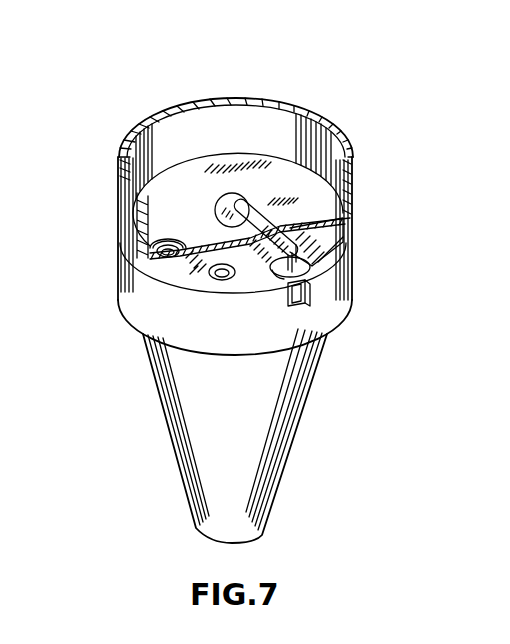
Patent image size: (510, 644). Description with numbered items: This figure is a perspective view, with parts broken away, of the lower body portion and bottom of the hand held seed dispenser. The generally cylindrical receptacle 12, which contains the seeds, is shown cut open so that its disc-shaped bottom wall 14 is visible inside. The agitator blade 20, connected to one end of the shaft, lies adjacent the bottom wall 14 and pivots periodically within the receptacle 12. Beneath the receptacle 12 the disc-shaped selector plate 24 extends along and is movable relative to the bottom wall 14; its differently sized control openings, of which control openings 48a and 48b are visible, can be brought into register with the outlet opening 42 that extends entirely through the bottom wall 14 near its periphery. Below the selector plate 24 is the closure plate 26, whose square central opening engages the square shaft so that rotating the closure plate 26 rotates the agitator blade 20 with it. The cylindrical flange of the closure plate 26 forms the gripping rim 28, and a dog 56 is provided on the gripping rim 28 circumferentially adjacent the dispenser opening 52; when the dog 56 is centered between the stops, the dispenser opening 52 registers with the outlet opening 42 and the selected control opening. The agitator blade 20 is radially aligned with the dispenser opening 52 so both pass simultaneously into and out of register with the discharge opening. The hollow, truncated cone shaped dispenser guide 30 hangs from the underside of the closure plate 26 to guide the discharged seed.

The receptacle 12 is at (356, 178).
The bottom wall 14 is at (182, 167).
The agitator blade 20 is at (266, 216).
The selector plate 24 is at (338, 243).
The closure plate 26 is at (322, 263).
The gripping rim 28 is at (120, 277).
The dispenser guide 30 is at (298, 441).
The outlet opening 42 is at (168, 243).
The control opening 48a is at (165, 257).
The control opening 48b is at (218, 281).
The dispenser opening 52 is at (277, 273).
The dog 56 is at (306, 297).